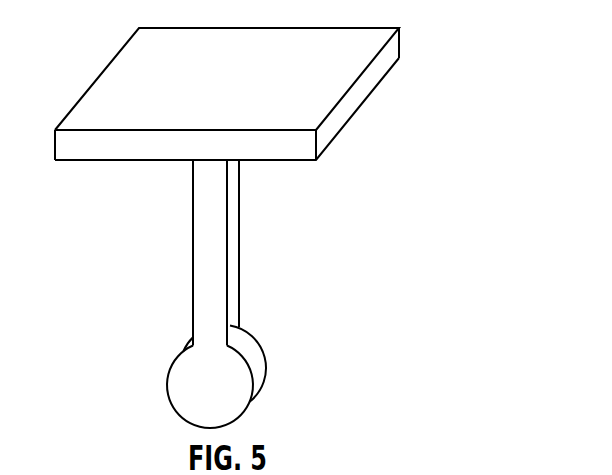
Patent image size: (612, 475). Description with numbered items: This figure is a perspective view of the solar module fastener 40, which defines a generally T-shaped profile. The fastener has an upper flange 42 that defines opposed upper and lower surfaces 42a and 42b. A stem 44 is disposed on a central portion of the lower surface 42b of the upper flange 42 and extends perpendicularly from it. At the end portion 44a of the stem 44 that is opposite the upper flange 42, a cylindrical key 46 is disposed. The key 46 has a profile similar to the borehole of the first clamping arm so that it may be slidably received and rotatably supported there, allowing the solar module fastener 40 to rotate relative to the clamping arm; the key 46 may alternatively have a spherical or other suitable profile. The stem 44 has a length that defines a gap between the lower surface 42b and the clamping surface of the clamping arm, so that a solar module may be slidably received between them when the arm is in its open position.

The solar module fastener 40 is at (458, 34).
The upper flange 42 is at (90, 81).
The upper surface 42a is at (313, 47).
The lower surface 42b is at (280, 161).
The stem 44 is at (192, 268).
The end portion 44a is at (152, 408).
The cylindrical key 46 is at (255, 350).